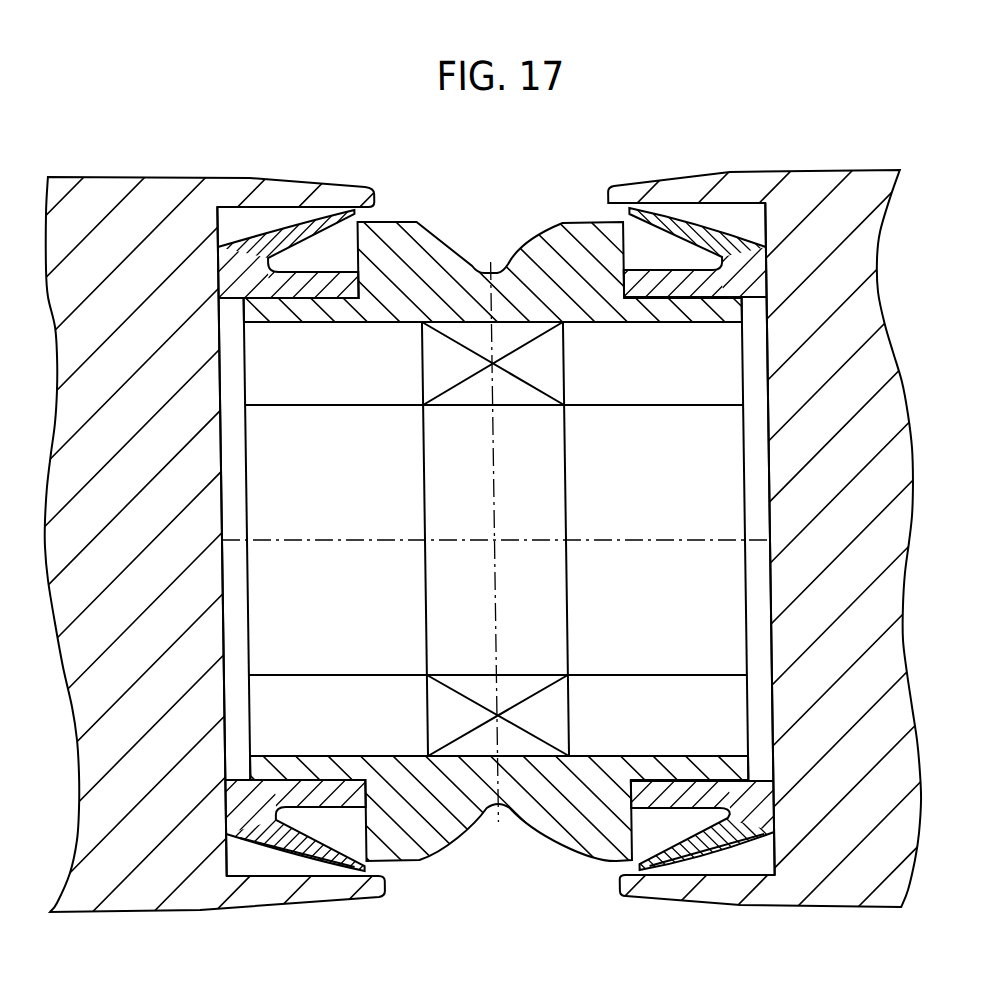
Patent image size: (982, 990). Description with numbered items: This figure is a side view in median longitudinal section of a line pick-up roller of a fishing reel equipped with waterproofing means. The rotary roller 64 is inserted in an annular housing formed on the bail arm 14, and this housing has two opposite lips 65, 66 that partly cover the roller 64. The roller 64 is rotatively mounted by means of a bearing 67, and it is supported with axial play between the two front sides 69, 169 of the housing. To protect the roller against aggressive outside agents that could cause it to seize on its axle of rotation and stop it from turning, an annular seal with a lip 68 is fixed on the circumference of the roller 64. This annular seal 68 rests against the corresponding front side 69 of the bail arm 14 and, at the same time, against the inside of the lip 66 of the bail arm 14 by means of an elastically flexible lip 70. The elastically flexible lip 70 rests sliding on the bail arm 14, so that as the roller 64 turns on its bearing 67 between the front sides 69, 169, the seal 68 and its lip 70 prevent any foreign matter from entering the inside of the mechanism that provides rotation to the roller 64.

The bail arm 14 is at (99, 197).
The front side of the housing 169 is at (222, 629).
The front side of the housing 69 is at (772, 605).
The roller 64 is at (490, 238).
The lip 65 is at (304, 190).
The lip 66 is at (673, 191).
The bearing 67 is at (550, 357).
The annular seal with a lip 68 is at (753, 799).
The elastically flexible lip 70 is at (696, 845).